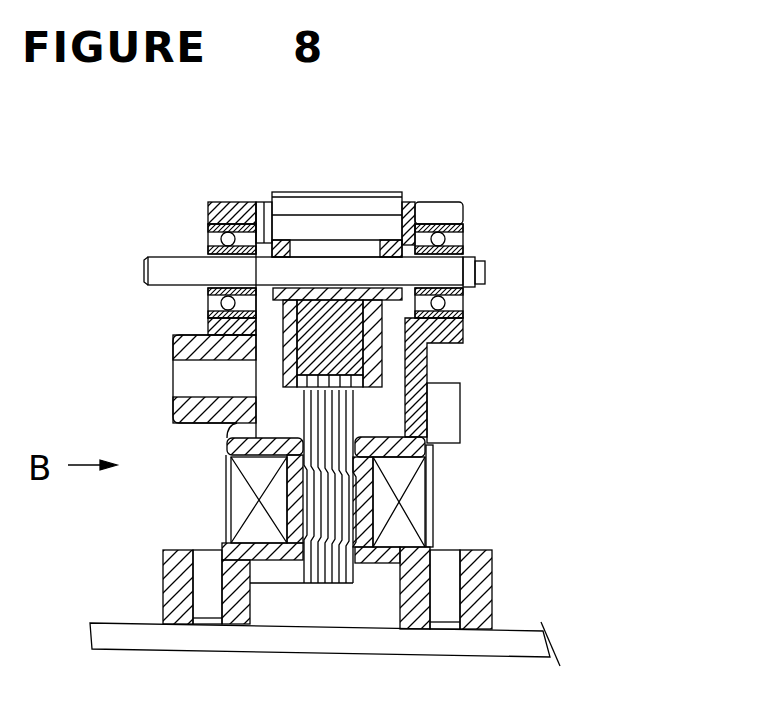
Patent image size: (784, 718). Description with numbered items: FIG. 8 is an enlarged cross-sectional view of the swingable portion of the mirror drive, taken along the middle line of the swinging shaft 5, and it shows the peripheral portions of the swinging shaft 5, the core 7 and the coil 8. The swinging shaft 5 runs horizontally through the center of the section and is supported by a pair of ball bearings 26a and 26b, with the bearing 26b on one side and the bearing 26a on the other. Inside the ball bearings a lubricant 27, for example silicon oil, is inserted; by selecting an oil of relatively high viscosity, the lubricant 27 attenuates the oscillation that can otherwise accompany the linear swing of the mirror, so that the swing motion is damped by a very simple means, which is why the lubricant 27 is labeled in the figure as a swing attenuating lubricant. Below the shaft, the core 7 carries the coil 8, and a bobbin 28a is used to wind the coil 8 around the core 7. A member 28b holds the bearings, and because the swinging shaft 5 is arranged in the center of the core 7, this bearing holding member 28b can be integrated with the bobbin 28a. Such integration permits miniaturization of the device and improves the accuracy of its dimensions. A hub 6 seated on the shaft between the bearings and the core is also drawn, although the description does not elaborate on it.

The swinging shaft 5 is at (170, 263).
The hub 6 is at (340, 350).
The core 7 is at (335, 432).
The coil 8 is at (247, 508).
The bearing 26a is at (448, 236).
The bearing 26b is at (228, 232).
The lubricant 27 is at (462, 248).
The bobbin 28a is at (410, 540).
The member for holding the bearing 28b is at (443, 336).